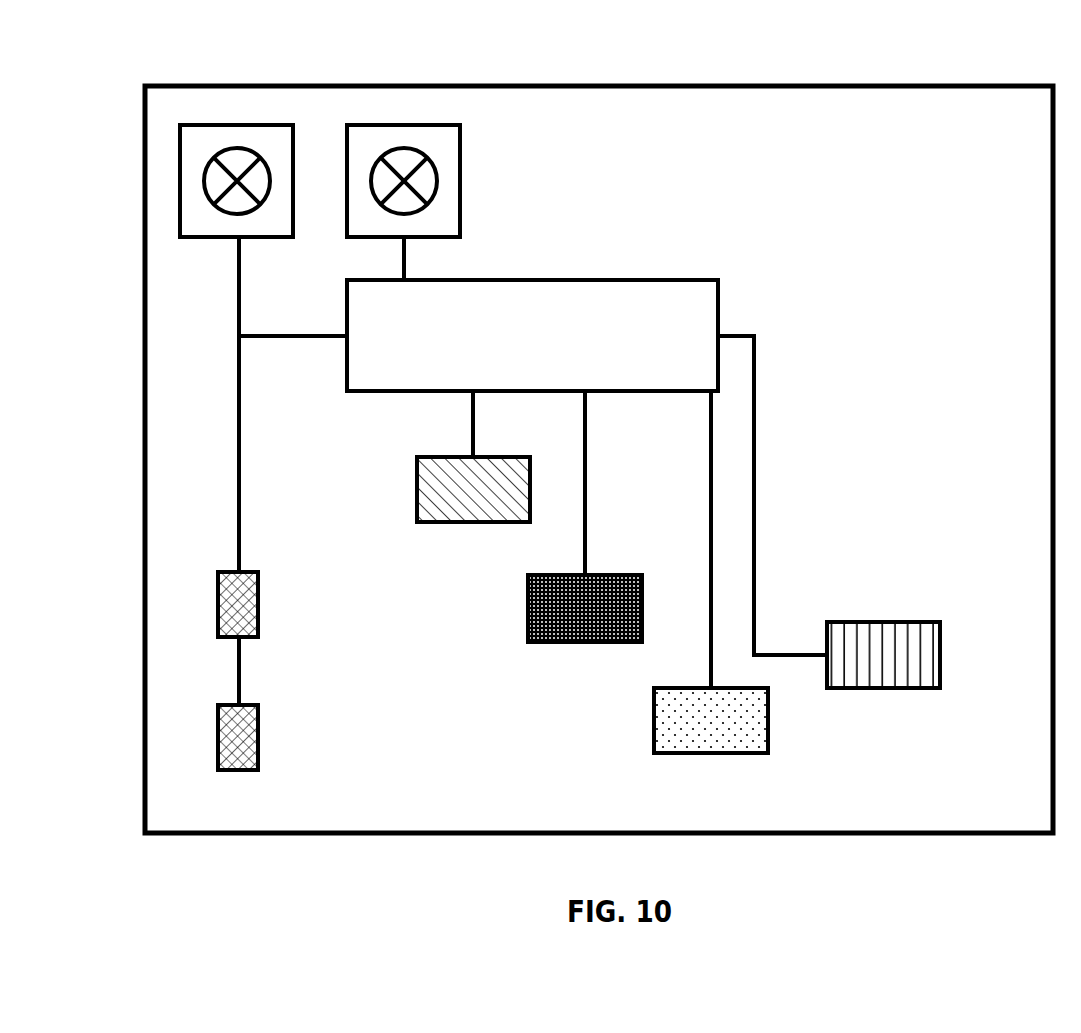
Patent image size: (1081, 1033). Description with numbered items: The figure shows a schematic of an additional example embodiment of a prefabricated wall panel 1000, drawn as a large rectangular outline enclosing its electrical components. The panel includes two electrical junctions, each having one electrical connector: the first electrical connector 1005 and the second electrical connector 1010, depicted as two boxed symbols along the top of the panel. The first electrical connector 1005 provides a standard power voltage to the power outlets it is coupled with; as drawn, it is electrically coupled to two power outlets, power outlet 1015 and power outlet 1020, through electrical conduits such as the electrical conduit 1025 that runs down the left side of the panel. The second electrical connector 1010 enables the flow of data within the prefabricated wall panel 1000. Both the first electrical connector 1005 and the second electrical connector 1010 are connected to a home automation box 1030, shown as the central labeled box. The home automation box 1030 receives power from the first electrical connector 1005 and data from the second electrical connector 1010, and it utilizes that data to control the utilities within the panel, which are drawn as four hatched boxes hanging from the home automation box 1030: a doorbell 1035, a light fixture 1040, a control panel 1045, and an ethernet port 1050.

The prefabricated wall panel 1000 is at (585, 55).
The first electrical connector 1005 is at (204, 178).
The second electrical connector 1010 is at (433, 172).
The power outlet 1015 is at (258, 590).
The power outlet 1020 is at (258, 722).
The electrical conduit 1025 is at (239, 405).
The home automation box 1030 is at (610, 280).
The doorbell 1035 is at (472, 522).
The light fixture 1040 is at (585, 642).
The control panel 1045 is at (711, 753).
The ethernet port 1050 is at (882, 688).